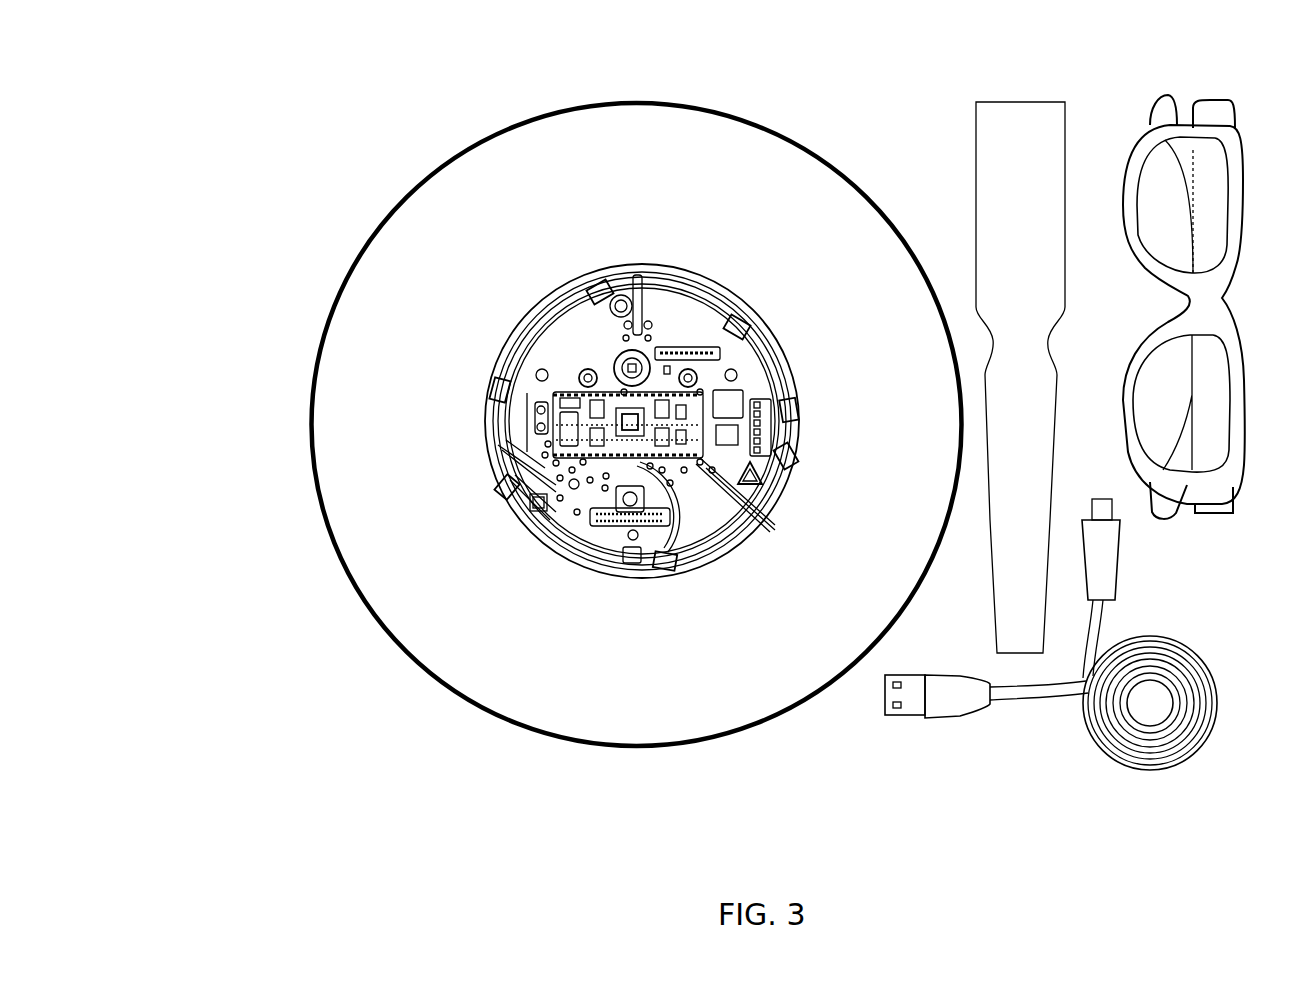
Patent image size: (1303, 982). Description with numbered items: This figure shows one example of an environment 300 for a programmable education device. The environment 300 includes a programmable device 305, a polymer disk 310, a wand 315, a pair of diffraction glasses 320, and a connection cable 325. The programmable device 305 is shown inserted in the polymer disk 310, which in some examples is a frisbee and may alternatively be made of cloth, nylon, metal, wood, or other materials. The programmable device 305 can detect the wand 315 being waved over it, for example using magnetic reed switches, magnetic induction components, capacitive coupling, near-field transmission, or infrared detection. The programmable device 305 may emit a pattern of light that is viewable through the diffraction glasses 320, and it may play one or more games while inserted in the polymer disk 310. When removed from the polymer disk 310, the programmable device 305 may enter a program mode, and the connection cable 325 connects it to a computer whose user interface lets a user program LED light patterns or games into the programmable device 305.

The environment 300 is at (252, 70).
The programmable device 305 is at (733, 318).
The polymer disk 310 is at (372, 272).
The wand 315 is at (978, 101).
The pair of diffraction glasses 320 is at (1223, 97).
The connection cable 325 is at (1208, 706).